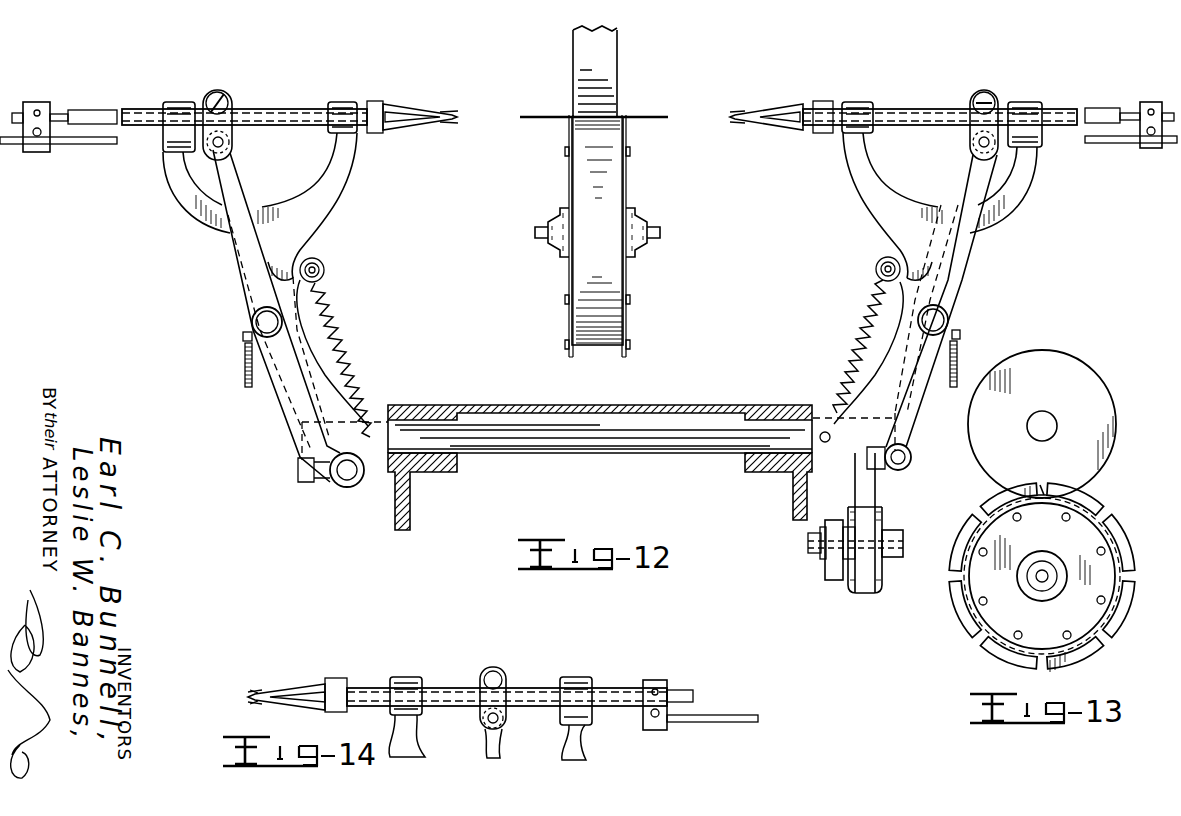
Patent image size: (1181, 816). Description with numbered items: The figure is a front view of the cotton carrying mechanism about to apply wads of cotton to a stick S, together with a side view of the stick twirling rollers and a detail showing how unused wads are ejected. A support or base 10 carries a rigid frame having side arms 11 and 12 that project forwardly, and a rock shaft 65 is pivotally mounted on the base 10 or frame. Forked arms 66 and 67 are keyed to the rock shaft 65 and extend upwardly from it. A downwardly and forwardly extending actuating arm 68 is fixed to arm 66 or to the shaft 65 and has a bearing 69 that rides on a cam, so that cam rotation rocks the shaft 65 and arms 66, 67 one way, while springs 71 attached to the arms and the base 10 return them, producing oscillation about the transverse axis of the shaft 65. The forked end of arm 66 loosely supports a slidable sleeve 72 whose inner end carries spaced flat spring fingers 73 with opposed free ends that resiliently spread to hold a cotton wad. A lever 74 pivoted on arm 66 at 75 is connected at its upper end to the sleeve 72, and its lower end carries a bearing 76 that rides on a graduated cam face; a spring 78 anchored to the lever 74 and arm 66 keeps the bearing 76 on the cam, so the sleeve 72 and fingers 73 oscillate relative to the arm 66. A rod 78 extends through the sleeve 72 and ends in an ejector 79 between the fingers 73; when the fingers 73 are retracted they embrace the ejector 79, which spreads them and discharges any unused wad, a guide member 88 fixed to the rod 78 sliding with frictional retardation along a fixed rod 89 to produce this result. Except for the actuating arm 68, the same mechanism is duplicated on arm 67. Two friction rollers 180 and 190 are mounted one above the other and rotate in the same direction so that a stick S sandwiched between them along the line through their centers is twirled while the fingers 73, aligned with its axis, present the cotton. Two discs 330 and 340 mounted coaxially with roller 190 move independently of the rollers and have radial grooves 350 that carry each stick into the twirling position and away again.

In FIG. 12, the support or base 10 is at (505, 410).
In FIG. 12, the side arm 11 is at (793, 496).
In FIG. 12, the side arm 12 is at (410, 513).
In FIG. 12, the rock shaft 65 is at (632, 452).
In FIG. 12, the forked arm 66 is at (893, 222).
In FIG. 12, the forked arm 67 is at (265, 258).
In FIG. 12, the actuating arm 68 is at (876, 490).
In FIG. 12, the bearing 69 is at (825, 580).
In FIG. 12, the spring 71 is at (958, 354).
In FIG. 12, the slidable sleeve 72 is at (785, 125).
In FIG. 14, the slidable sleeve 72 is at (288, 706).
In FIG. 12, the spring finger 73 is at (418, 124).
In FIG. 14, the spring finger 73 is at (254, 697).
In FIG. 12, the lever 74 is at (905, 410).
In FIG. 14, the lever 74 is at (502, 742).
In FIG. 12, the pivot 75 is at (950, 318).
In FIG. 12, the bearing 76 is at (902, 452).
In FIG. 12, the spring / rod 78 is at (865, 310).
In FIG. 14, the spring / rod 78 is at (695, 696).
In FIG. 12, the ejector 79 is at (790, 122).
In FIG. 14, the ejector 79 is at (280, 694).
In FIG. 12, the guide member 88 is at (1148, 102).
In FIG. 14, the guide member 88 is at (660, 681).
In FIG. 12, the fixed rod 89 is at (1112, 143).
In FIG. 14, the fixed rod 89 is at (694, 722).
In FIG. 12, the roller 180 is at (610, 46).
In FIG. 13, the roller 180 is at (1042, 424).
In FIG. 12, the roller 190 is at (597, 231).
In FIG. 13, the roller 190 is at (1108, 532).
In FIG. 12, the disc 330 is at (570, 283).
In FIG. 13, the disc 330 is at (1122, 608).
In FIG. 12, the disc 340 is at (628, 284).
In FIG. 12, the radial groove 350 is at (626, 186).
In FIG. 13, the radial groove 350 is at (1128, 577).
In FIG. 12, the stick S is at (632, 117).
In FIG. 13, the stick S is at (1042, 500).